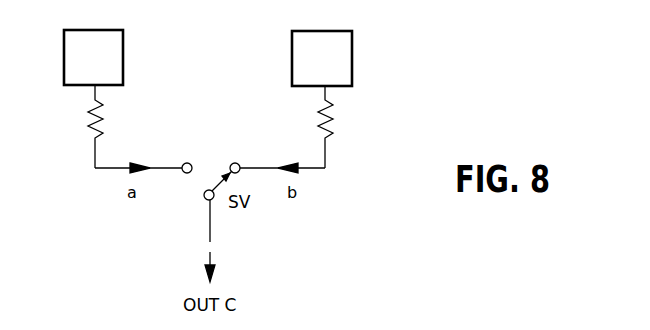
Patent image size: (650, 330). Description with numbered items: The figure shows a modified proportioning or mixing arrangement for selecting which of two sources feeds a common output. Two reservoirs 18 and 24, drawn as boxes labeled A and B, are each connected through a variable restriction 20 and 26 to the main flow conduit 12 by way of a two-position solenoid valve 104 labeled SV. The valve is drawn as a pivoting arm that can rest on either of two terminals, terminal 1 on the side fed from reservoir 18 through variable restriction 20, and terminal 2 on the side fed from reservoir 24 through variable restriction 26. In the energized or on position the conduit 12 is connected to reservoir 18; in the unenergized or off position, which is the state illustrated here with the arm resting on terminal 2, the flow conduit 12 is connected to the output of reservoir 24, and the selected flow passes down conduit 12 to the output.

The reservoir 18 is at (112, 55).
The reservoir 24 is at (340, 52).
The variable restriction 20 is at (86, 117).
The variable restriction 26 is at (318, 117).
The two-position solenoid valve 104 is at (207, 150).
The main flow conduit 12 is at (208, 222).
The switch terminal 1 is at (188, 155).
The switch terminal 2 is at (235, 153).